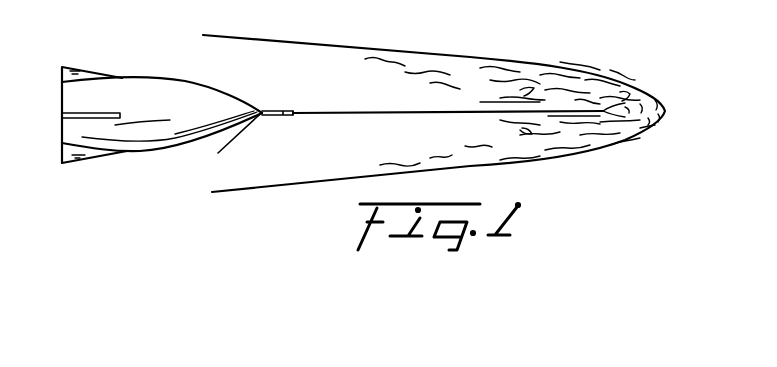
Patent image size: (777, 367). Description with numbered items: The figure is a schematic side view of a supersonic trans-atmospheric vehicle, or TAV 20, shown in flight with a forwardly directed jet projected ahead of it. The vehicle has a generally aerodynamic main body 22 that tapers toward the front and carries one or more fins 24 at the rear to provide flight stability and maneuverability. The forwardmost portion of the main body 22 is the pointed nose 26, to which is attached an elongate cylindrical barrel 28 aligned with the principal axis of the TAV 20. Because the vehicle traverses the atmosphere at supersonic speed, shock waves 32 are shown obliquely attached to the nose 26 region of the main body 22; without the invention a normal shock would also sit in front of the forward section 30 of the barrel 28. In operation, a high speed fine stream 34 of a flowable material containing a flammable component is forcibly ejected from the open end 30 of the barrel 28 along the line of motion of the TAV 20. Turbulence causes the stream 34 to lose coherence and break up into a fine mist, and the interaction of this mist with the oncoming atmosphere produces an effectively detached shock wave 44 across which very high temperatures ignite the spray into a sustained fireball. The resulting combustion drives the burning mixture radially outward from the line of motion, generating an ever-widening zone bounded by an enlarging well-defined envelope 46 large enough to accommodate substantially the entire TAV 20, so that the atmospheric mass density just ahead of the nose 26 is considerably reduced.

The trans-atmospheric vehicle 20 is at (165, 60).
The main body 22 is at (158, 133).
The fin 24 is at (85, 163).
The pointed nose 26 is at (262, 113).
The barrel 28 is at (276, 108).
The open end of barrel 30 is at (295, 115).
The shock waves 32 is at (257, 105).
The stream 34 is at (358, 110).
The detached shock wave 44 is at (665, 112).
The envelope 46 is at (290, 187).